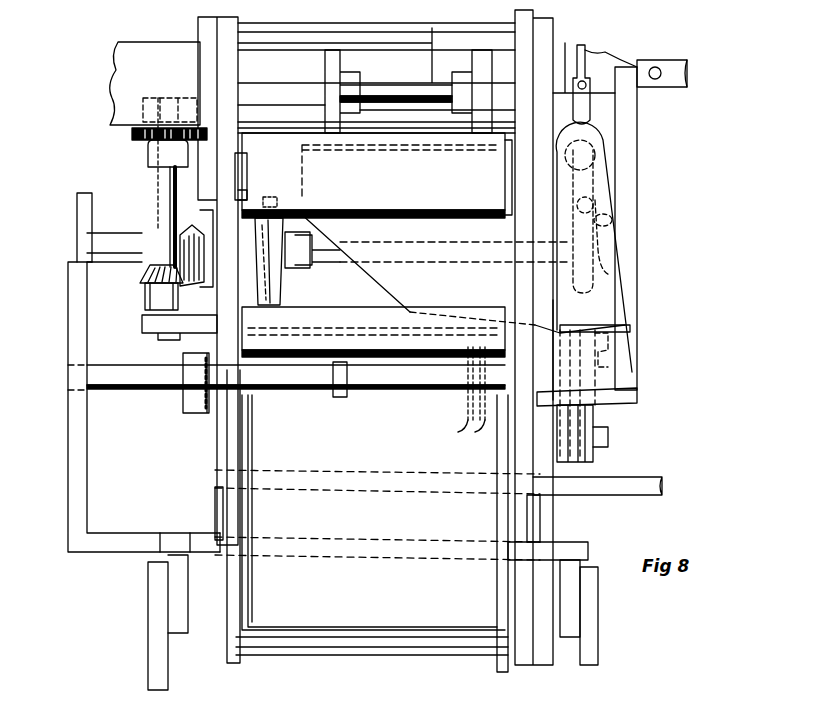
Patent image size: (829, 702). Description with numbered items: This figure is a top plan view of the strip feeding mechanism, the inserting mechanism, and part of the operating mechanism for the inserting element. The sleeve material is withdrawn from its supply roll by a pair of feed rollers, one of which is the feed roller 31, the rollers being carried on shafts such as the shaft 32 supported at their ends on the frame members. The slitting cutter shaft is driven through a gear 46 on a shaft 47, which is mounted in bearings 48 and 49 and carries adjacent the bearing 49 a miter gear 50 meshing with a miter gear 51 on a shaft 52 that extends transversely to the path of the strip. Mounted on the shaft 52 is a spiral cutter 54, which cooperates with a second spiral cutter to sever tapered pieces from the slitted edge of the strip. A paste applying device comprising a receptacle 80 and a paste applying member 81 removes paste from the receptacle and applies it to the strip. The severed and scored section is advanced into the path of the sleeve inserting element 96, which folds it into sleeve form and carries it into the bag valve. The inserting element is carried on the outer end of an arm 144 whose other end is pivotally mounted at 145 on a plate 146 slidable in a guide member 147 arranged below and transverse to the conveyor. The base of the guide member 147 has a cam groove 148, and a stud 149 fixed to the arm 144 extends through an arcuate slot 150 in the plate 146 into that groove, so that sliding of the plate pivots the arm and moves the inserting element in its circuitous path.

The feed roller 31 is at (425, 212).
The shaft 32 is at (475, 60).
The gear 46 is at (130, 135).
The shaft 47 is at (168, 177).
The bearing 48 is at (175, 98).
The bearing 49 is at (142, 323).
The miter gear 50 is at (140, 274).
The miter gear 51 is at (178, 218).
The shaft 52 is at (340, 265).
The spiral cutter 54 is at (283, 280).
The receptacle 80 is at (345, 620).
The paste applying member 81 is at (470, 425).
The sleeve inserting element 96 is at (408, 297).
The arm 144 is at (613, 313).
The pivot 145 is at (597, 160).
The plate 146 is at (605, 130).
The guide member 147 is at (625, 105).
The cam groove 148 is at (583, 205).
The stud 149 is at (607, 218).
The arcuate slot 150 is at (607, 275).